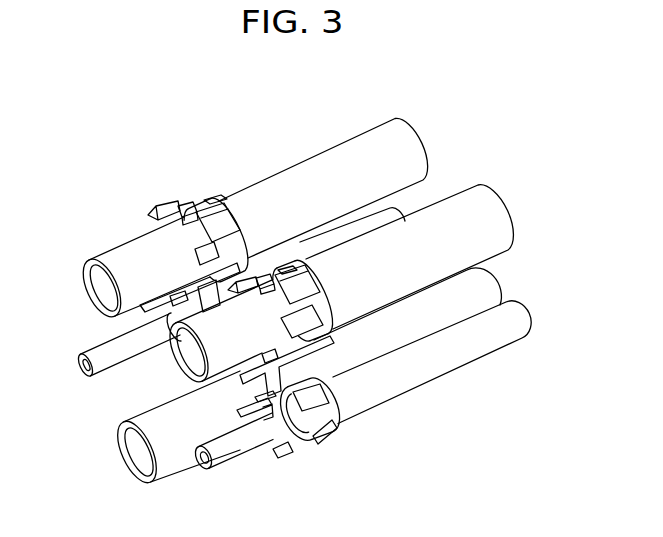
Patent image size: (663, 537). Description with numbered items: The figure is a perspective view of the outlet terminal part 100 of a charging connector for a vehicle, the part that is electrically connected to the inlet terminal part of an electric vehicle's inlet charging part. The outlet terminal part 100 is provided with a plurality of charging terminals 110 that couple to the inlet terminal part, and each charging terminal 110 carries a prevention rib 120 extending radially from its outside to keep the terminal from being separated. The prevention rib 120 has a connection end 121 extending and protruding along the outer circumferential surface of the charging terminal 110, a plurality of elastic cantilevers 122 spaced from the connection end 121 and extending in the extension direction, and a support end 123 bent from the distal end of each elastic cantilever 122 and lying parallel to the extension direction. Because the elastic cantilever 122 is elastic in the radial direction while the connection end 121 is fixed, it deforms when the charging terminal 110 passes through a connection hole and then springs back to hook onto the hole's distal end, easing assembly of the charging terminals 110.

The outlet terminal part 100 is at (86, 112).
The charging terminal 110 is at (318, 177).
The prevention rib 120 is at (120, 153).
The connection end 121 is at (213, 199).
The elastic cantilever 122 is at (192, 204).
The support end 123 is at (170, 201).